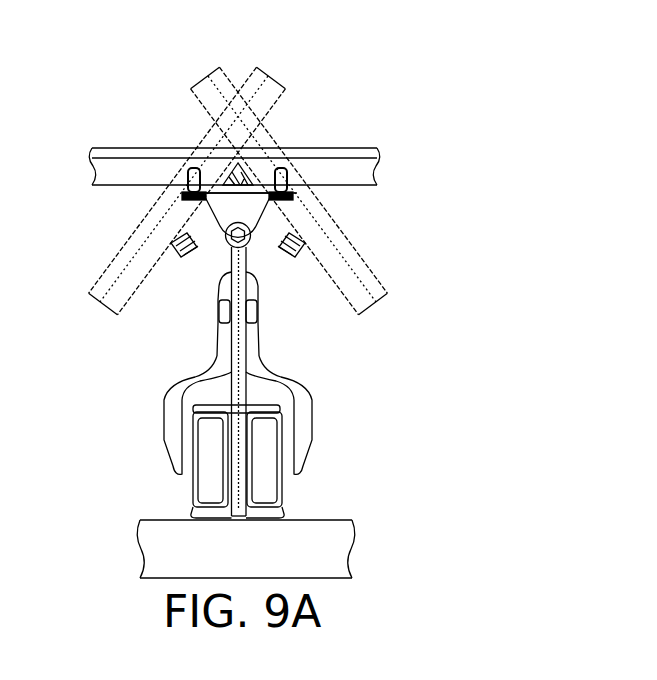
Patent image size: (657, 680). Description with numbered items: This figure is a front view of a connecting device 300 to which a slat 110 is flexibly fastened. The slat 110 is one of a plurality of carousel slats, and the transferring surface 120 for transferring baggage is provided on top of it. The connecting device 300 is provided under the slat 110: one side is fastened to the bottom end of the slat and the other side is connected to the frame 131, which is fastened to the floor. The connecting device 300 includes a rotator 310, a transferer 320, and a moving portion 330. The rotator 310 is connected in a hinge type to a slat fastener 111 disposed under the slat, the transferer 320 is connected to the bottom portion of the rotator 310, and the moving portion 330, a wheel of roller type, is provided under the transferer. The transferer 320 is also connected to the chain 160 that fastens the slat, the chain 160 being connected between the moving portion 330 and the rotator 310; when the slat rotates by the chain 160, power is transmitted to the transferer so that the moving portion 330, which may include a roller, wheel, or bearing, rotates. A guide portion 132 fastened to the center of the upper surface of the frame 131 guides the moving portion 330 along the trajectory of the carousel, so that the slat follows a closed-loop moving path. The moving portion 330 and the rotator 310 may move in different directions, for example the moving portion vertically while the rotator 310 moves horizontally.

The connecting device 300 is at (217, 32).
The transferring surface 120 is at (143, 148).
The slat 110 is at (130, 178).
The slat fastener 111 is at (287, 207).
The rotator 310 is at (290, 253).
The chain 160 is at (262, 315).
The transferer 320 is at (176, 387).
The moving portion 330 is at (291, 458).
The frame 131 is at (163, 528).
The guide portion 132 is at (285, 506).